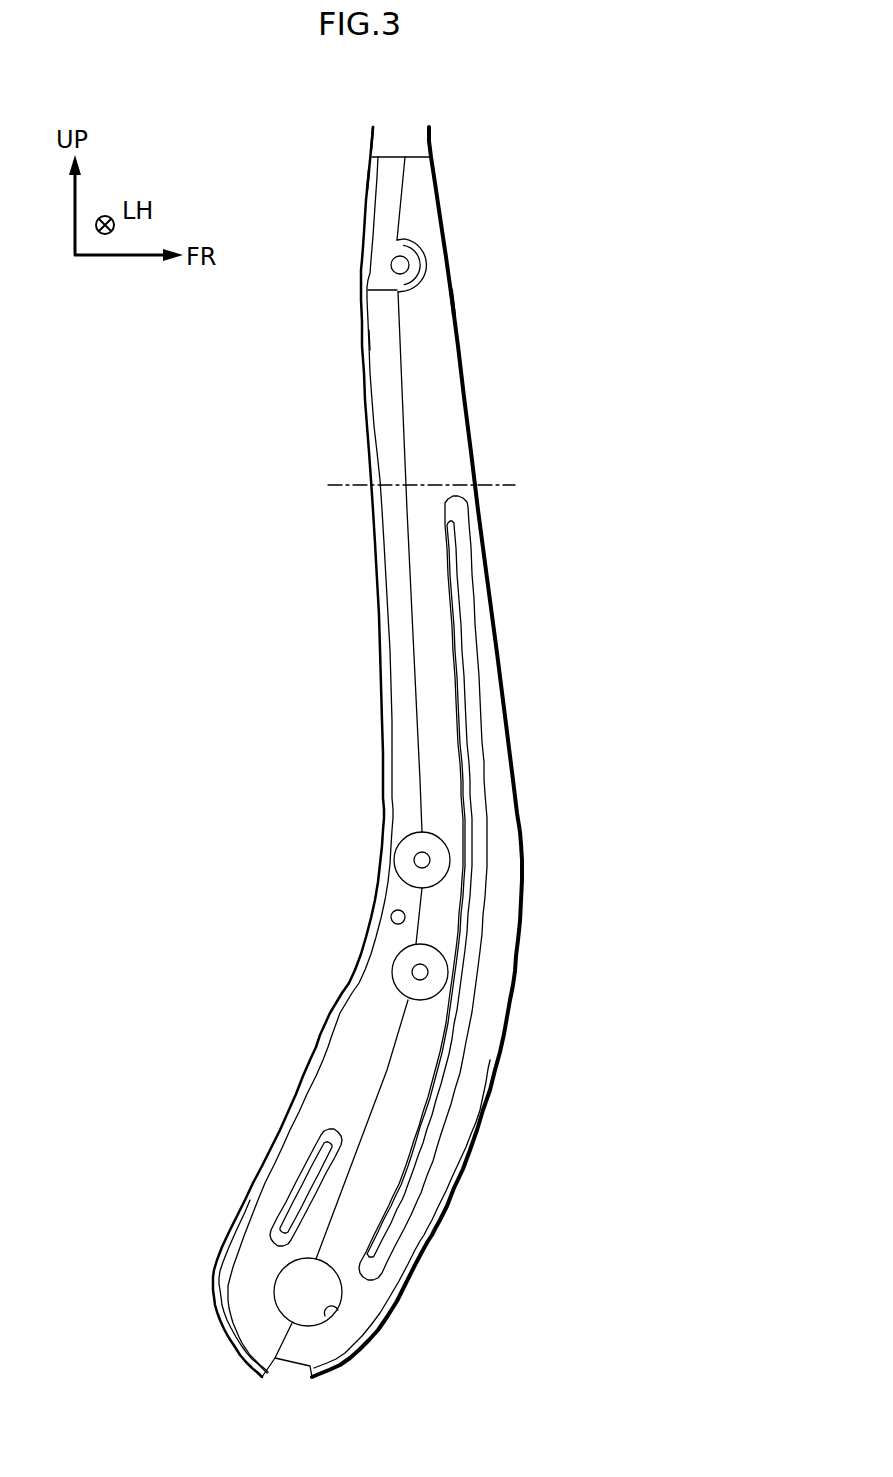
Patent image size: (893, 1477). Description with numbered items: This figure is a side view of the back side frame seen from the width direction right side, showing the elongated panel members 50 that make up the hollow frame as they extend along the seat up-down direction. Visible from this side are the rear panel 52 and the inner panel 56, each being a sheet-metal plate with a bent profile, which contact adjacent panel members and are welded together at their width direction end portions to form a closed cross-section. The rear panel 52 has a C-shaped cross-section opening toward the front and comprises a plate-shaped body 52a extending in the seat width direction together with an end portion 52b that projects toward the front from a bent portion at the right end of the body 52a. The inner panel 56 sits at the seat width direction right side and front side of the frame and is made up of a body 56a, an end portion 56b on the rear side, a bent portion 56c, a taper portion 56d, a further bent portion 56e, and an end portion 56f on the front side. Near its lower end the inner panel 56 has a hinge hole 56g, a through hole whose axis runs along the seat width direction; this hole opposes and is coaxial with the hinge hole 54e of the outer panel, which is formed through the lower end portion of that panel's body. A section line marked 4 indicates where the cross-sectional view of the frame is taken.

The panel member 50 is at (389, 724).
The rear panel 52 is at (373, 126).
The body 52a is at (370, 133).
The end portion 52b is at (366, 177).
The inner panel 56 is at (404, 157).
The body 56a is at (403, 310).
The end portion 56b is at (380, 338).
The bent portion 56c is at (400, 368).
The taper portion 56d is at (448, 398).
The bent portion 56e is at (455, 303).
The end portion 56f is at (450, 272).
The hinge hole 56g is at (327, 1321).
The hinge hole 54e is at (331, 1311).
The section line 4- 4 is at (505, 474).